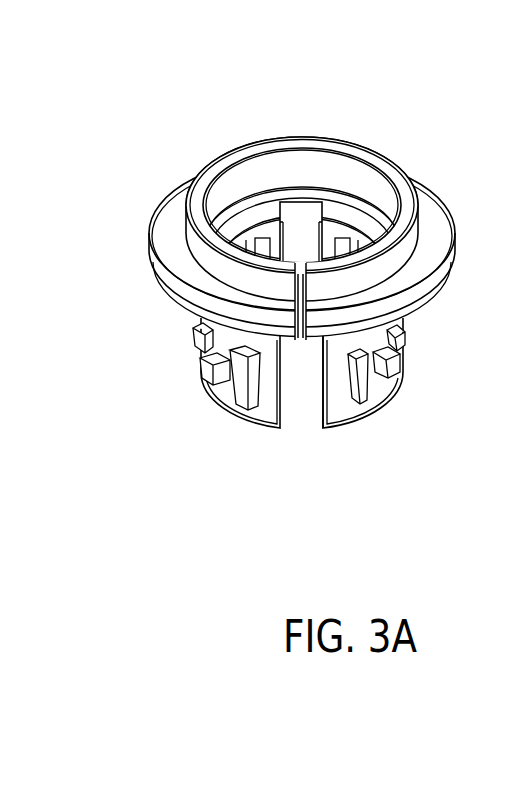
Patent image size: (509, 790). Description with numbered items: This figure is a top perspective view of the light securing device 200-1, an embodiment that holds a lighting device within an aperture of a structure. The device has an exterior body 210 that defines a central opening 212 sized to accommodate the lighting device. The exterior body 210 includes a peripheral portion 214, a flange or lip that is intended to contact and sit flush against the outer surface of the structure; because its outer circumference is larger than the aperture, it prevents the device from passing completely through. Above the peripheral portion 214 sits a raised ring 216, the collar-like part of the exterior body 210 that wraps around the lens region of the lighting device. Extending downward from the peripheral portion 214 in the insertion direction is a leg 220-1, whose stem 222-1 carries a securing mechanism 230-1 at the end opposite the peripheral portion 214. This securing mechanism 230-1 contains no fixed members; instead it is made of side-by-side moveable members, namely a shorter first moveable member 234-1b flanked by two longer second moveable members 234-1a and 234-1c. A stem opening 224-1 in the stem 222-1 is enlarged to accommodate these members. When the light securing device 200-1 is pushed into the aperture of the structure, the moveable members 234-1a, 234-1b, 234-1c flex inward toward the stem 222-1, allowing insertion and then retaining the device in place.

The light securing device 200-1 is at (274, 274).
The exterior body 210 is at (252, 216).
The opening 212 is at (300, 234).
The peripheral portion 214 is at (150, 232).
The ring 216 is at (260, 216).
The leg 220-1 is at (287, 425).
The stem 222-1 is at (332, 388).
The stem opening 224-1 is at (386, 341).
The securing mechanism 230-1 is at (181, 428).
The second moveable member 234-1a is at (200, 343).
The first moveable member 234-1b is at (218, 387).
The second moveable member 234-1c is at (255, 423).